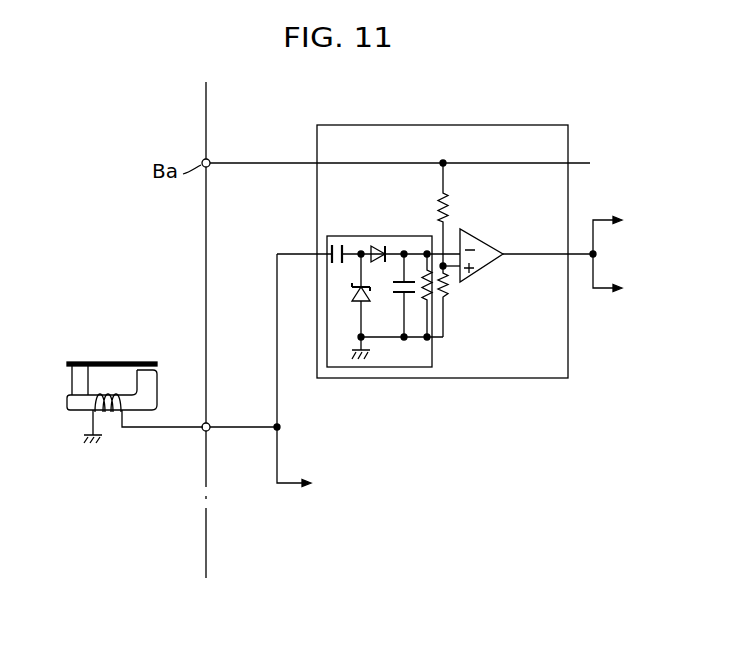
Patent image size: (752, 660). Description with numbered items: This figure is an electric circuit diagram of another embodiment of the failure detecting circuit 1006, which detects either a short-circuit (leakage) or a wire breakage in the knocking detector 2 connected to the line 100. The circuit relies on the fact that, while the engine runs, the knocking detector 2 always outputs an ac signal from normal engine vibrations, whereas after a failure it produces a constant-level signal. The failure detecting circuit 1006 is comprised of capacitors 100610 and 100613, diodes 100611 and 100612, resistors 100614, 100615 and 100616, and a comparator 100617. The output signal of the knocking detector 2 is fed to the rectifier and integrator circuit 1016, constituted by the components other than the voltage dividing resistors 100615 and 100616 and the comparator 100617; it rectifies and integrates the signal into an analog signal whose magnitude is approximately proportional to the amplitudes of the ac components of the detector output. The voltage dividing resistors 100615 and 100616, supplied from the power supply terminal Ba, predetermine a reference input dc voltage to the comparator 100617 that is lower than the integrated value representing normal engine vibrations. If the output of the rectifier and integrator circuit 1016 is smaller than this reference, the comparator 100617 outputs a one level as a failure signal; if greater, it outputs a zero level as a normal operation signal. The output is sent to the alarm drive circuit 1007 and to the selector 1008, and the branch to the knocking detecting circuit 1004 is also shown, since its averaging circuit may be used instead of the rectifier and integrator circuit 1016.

The knocking detector 2 is at (70, 410).
The signal line 100 is at (207, 555).
The knocking detecting circuit 1004 is at (322, 462).
The failure detecting circuit 1006 is at (443, 125).
The alarm drive circuit 1007 is at (637, 232).
The selector 1008 is at (637, 278).
The rectifier and integrator circuit 1016 is at (435, 352).
The capacitor 100610 is at (333, 243).
The diode 100611 is at (353, 298).
The diode 100612 is at (378, 246).
The capacitor 100613 is at (396, 293).
The resistor 100614 is at (431, 292).
The voltage dividing resistor 100615 is at (447, 213).
The voltage dividing resistor 100616 is at (446, 285).
The comparator 100617 is at (481, 241).